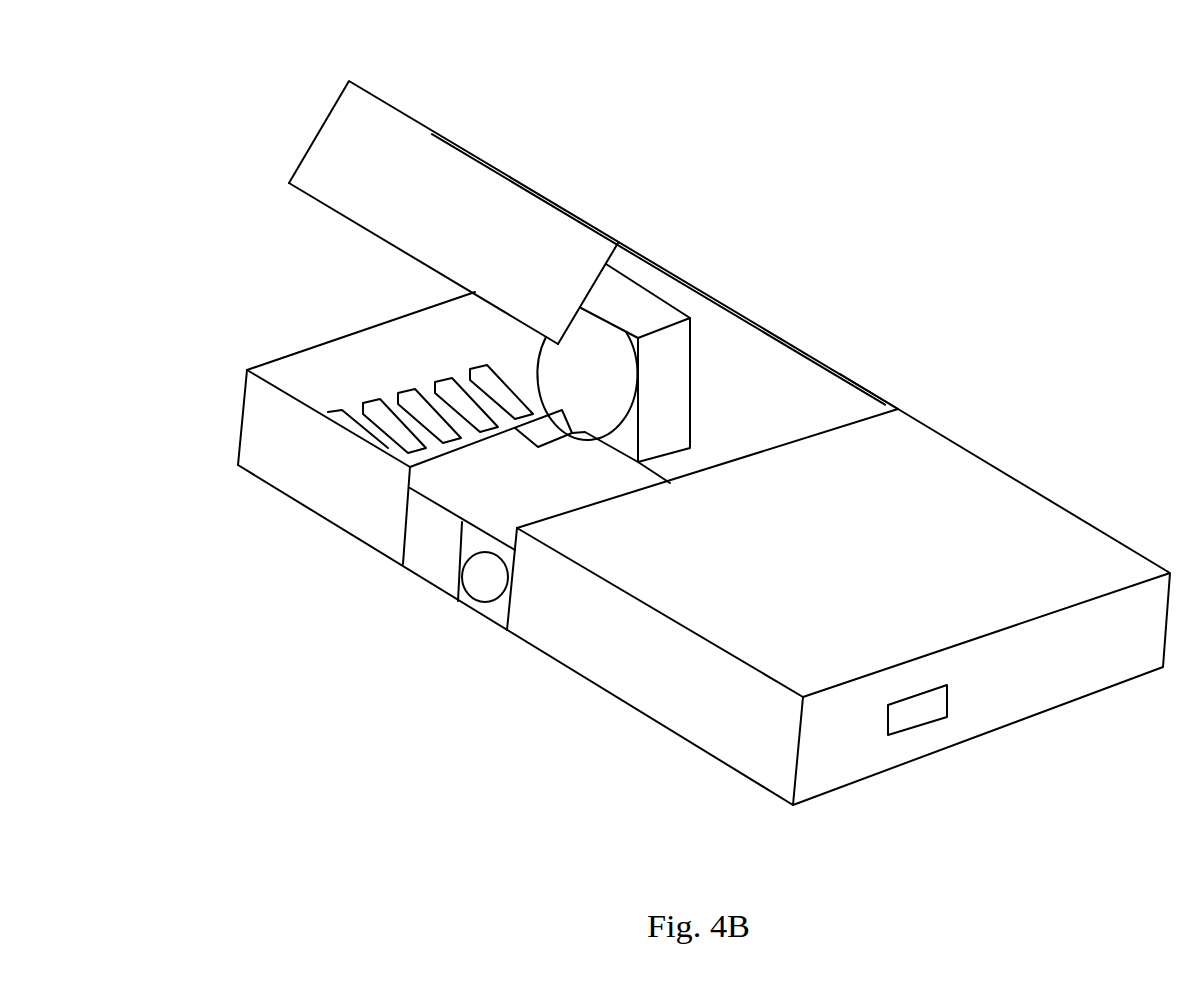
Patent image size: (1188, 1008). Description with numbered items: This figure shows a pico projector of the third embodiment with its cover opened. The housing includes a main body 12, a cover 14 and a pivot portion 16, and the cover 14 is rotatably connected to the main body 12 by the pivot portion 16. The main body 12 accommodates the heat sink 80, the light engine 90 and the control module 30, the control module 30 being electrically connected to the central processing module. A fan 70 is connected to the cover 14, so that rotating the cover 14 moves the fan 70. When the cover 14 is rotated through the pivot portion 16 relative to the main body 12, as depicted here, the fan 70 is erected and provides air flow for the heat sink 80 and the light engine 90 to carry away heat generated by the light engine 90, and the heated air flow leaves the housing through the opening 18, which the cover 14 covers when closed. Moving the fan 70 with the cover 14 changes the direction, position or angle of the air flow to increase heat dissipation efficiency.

The main body 12 is at (932, 520).
The cover 14 is at (483, 232).
The pivot portion 16 is at (857, 378).
The opening 18 is at (402, 341).
The control module 30 is at (918, 713).
The fan 70 is at (660, 377).
The heat sink 80 is at (394, 417).
The light engine 90 is at (485, 487).